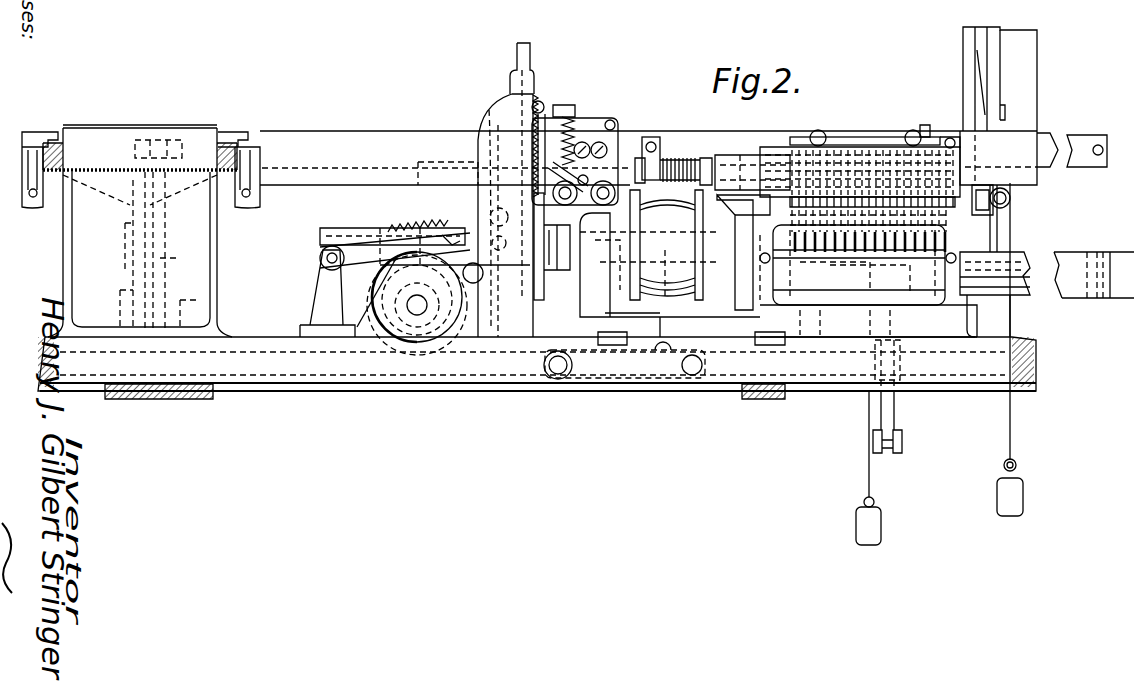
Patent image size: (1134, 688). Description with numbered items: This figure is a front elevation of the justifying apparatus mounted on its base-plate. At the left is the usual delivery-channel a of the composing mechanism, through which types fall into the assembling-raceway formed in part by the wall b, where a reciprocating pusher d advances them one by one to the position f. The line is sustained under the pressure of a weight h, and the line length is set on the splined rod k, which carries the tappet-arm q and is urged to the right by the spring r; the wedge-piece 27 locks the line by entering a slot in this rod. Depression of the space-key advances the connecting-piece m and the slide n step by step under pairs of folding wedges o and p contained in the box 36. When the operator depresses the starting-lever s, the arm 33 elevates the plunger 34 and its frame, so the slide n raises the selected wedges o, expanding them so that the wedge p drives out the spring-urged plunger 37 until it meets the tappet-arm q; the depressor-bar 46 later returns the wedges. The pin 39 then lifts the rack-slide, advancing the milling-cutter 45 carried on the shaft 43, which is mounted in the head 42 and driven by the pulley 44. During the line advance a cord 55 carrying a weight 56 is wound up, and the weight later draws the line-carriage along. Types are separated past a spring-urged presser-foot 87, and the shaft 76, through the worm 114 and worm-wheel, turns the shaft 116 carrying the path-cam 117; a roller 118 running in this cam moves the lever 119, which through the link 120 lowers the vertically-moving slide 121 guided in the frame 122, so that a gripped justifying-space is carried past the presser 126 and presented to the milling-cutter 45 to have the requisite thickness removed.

The shaft 116 is at (537, 365).
The starting-lever s is at (624, 360).
The frame 122 is at (505, 203).
The vertically-moving slide 121 is at (542, 119).
The link 120 is at (497, 238).
The shaft 76 is at (341, 286).
The lever 119 is at (395, 238).
The worm 114 is at (418, 220).
The roller 118 is at (454, 227).
The path-cam 117 is at (446, 303).
The presser 126 is at (575, 154).
The presser-foot 87 is at (557, 110).
The shaft 43 is at (545, 272).
The milling-cutter 45 is at (540, 300).
The pulley 44 is at (650, 245).
The head 42 is at (670, 275).
The spring-urged plunger 37 is at (716, 214).
The spring r is at (656, 158).
The tappet-arm q is at (673, 162).
The wall b is at (752, 163).
The box 36 is at (783, 160).
The depressor-bar 46 is at (832, 140).
The wedge p is at (870, 140).
The position f is at (937, 128).
The delivery-channel a is at (980, 47).
The splined rod k is at (998, 191).
The reciprocating pusher d is at (1072, 150).
The wedge-piece 27 is at (1010, 240).
The slide n is at (1024, 298).
The connecting-piece m is at (1124, 298).
The wedge o is at (918, 252).
The pin 39 is at (847, 292).
The plunger 34 is at (893, 399).
The arm 33 is at (902, 434).
The cord 55 is at (873, 474).
The weight 56 is at (880, 521).
The weight h is at (997, 486).